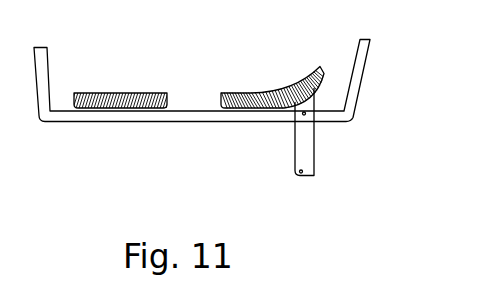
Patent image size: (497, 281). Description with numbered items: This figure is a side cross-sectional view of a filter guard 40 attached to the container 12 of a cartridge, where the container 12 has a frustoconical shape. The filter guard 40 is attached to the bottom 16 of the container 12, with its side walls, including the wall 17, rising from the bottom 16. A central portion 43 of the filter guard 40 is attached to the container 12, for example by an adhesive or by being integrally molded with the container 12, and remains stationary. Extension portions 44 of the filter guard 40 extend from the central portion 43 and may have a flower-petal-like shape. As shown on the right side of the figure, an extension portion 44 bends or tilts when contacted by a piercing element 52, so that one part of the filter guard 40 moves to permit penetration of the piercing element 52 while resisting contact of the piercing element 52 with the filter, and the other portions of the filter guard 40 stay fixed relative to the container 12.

The container 12 is at (58, 125).
The bottom 16 is at (210, 118).
The side wall 17 is at (362, 78).
The filter guard 40 is at (107, 81).
The central portion 43 is at (160, 92).
The extension portion 44 is at (297, 90).
The piercing element 52 is at (313, 143).